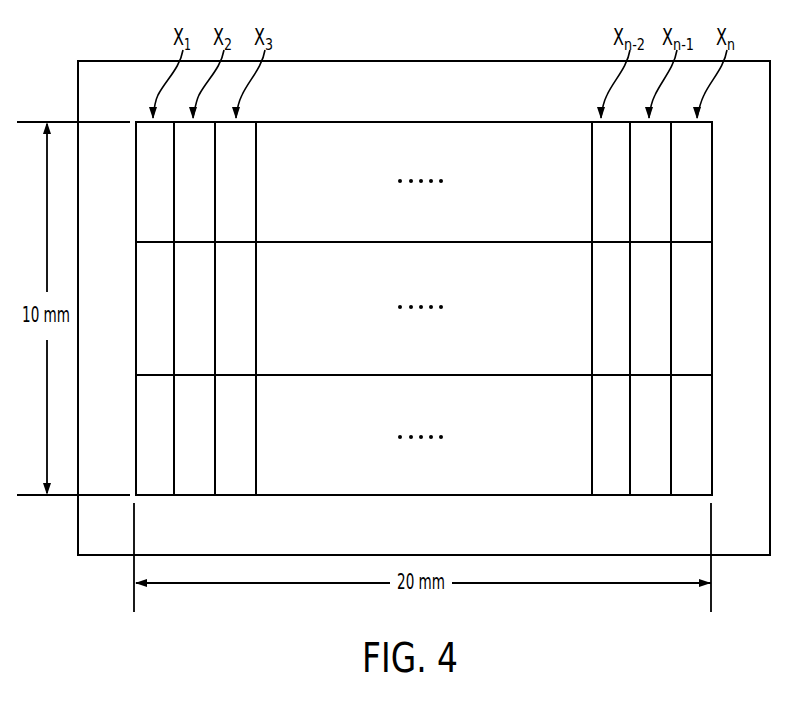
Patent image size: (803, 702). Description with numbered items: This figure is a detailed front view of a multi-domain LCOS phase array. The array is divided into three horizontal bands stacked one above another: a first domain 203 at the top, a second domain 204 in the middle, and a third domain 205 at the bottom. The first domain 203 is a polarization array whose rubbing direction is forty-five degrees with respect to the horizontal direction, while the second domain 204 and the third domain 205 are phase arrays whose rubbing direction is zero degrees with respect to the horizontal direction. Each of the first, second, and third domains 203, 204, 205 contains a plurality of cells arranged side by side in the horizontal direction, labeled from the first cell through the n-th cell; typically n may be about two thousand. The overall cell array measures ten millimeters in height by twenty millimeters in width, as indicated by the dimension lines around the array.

The first domain 203 is at (699, 185).
The second domain 204 is at (699, 315).
The third domain 205 is at (699, 443).